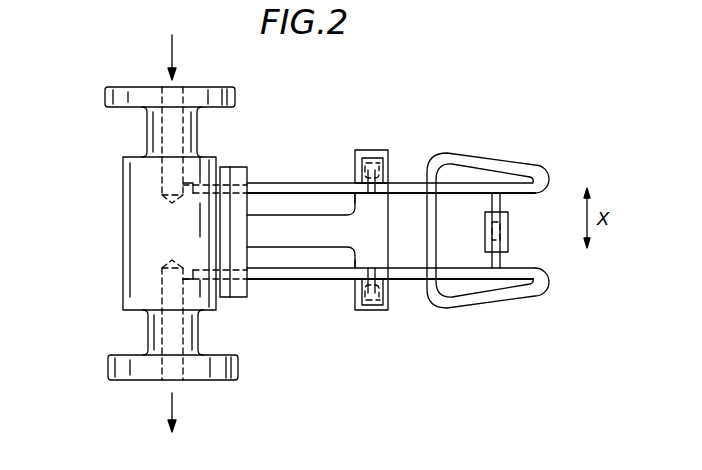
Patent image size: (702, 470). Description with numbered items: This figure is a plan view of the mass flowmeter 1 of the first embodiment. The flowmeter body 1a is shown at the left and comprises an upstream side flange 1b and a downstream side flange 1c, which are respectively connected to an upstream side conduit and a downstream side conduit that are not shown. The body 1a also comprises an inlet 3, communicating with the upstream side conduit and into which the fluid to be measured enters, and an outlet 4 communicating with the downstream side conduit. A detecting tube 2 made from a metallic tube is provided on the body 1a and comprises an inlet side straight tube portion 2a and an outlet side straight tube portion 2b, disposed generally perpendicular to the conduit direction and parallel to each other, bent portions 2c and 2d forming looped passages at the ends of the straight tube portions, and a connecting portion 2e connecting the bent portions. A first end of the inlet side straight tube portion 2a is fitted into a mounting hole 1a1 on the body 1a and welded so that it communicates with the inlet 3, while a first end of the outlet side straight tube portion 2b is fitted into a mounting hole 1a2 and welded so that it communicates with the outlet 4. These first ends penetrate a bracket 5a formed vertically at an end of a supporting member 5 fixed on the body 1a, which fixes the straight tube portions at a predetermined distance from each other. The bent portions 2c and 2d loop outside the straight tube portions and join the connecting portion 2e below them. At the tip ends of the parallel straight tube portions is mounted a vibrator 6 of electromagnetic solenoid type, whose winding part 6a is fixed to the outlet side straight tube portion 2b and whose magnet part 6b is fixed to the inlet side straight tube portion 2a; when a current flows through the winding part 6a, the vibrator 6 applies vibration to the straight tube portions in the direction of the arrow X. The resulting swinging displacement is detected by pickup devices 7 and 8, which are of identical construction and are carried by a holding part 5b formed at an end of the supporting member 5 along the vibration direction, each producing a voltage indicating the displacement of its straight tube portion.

The flowmeter 1 is at (438, 75).
The flowmeter body 1a is at (140, 238).
The mounting hole 1a1 is at (203, 172).
The mounting hole 1a2 is at (207, 290).
The upstream side flange 1b is at (112, 100).
The downstream side flange 1c is at (108, 364).
The detecting tube 2 is at (558, 176).
The inlet side straight tube portion 2a is at (311, 184).
The outlet side straight tube portion 2b is at (306, 280).
The bent portion 2c is at (477, 151).
The bent portion 2d is at (483, 300).
The connecting portion 2e is at (434, 236).
The inlet 3 is at (185, 126).
The outlet 4 is at (185, 345).
The supporting member 5 is at (315, 235).
The bracket 5a is at (237, 223).
The holding part 5b is at (367, 150).
The vibrator 6 is at (515, 246).
The winding part 6a is at (487, 227).
The magnet part 6b is at (502, 228).
The pickup device 7 is at (387, 158).
The pickup device 8 is at (388, 302).